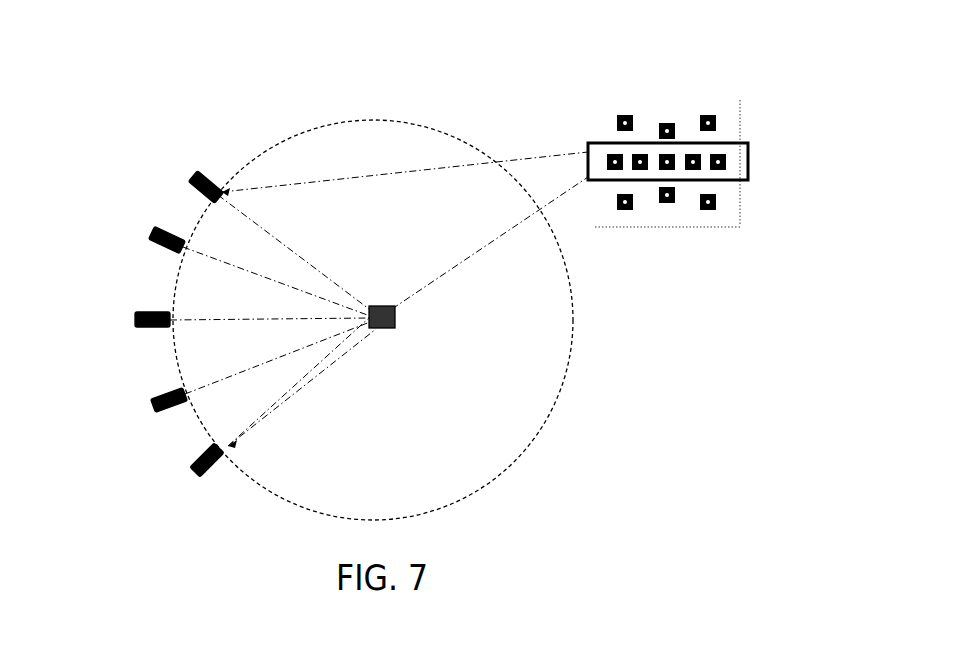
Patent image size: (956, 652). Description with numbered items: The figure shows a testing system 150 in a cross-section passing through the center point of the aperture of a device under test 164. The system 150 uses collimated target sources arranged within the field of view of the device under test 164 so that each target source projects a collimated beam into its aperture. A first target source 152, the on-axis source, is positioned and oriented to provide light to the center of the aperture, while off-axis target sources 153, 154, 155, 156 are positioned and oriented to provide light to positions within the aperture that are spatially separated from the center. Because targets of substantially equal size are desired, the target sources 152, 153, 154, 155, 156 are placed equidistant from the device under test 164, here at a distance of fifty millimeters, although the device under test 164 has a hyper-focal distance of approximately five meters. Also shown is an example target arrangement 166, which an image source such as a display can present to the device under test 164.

The system 150 is at (655, 47).
The first target source 152 is at (138, 314).
The off-axis target source 153 is at (193, 177).
The off-axis target source 154 is at (155, 234).
The off-axis target source 155 is at (157, 400).
The off-axis target source 156 is at (196, 466).
The device under test 164 is at (393, 327).
The target arrangement 166 is at (655, 227).